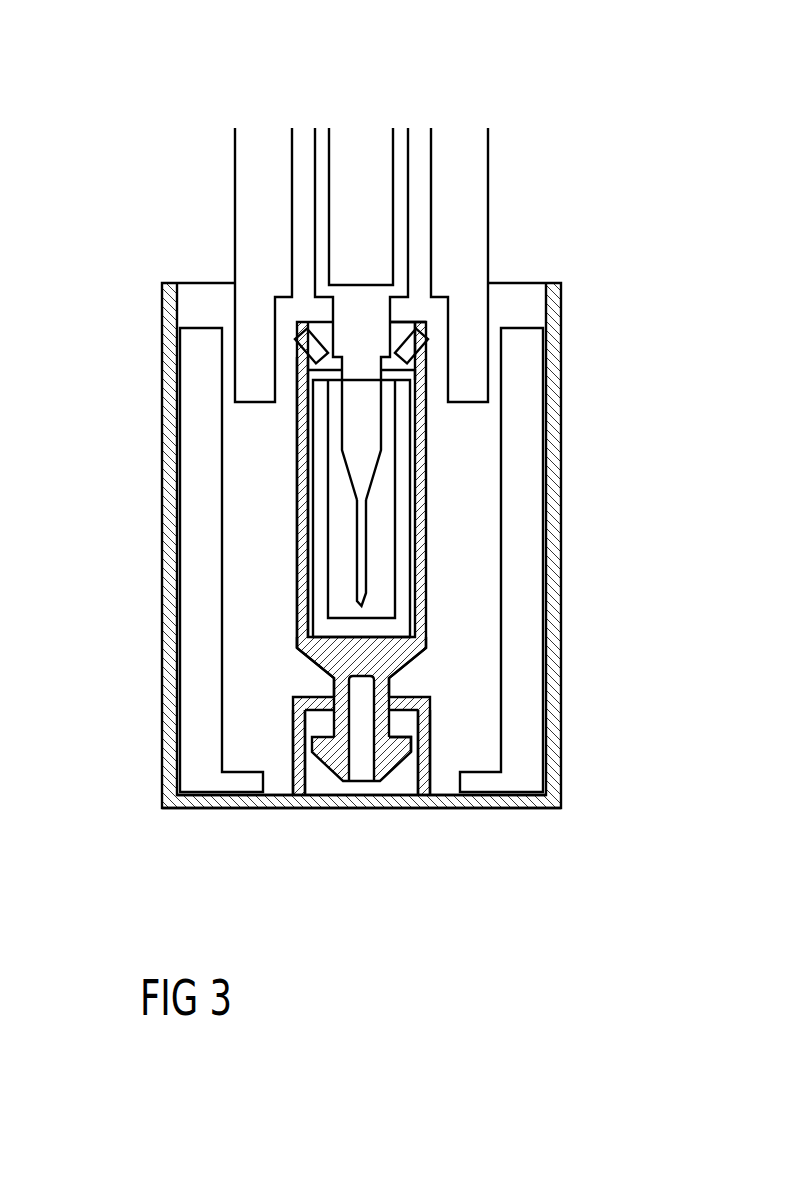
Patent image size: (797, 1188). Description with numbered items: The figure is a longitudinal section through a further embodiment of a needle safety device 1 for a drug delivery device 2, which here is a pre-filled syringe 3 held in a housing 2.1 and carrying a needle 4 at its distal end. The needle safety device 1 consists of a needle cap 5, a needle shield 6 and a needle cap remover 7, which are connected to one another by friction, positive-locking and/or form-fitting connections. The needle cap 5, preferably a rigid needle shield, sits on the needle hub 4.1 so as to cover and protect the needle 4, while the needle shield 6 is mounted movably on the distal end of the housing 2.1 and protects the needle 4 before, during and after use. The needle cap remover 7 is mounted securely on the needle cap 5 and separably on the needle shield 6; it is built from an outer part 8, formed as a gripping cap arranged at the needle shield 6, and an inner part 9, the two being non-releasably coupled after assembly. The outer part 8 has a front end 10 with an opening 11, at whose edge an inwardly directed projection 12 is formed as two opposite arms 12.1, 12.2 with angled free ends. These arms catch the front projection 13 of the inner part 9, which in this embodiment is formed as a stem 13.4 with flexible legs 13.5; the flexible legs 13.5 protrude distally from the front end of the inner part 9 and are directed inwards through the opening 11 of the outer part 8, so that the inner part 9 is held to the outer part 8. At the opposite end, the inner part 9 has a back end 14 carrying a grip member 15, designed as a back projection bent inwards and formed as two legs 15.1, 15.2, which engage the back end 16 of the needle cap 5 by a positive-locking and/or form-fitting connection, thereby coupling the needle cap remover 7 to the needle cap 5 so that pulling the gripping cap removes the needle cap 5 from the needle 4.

The needle safety device 1 is at (138, 740).
The drug delivery device 2 is at (222, 124).
The housing 2.1 is at (472, 142).
The pre-filled syringe 3 is at (325, 142).
The needle 4 is at (362, 568).
The needle hub 4.1 is at (355, 407).
The needle cap 5 is at (317, 497).
The needle shield 6 is at (528, 442).
The needle cap remover 7 is at (255, 816).
The outer part 8 is at (554, 492).
The inner part 9 is at (303, 575).
The front end 10 is at (515, 800).
The opening 11 is at (362, 790).
The projection 12 is at (294, 784).
The opposite arm 12.1 is at (293, 720).
The opposite arm 12.2 is at (420, 718).
The front projection 13 is at (397, 779).
The stem 13.4 is at (330, 660).
The flexible legs 13.5 is at (400, 745).
The back end 14 is at (284, 358).
The grip member 15 is at (402, 328).
The leg 15.1 is at (298, 322).
The leg 15.2 is at (426, 322).
The back end 16 is at (425, 357).